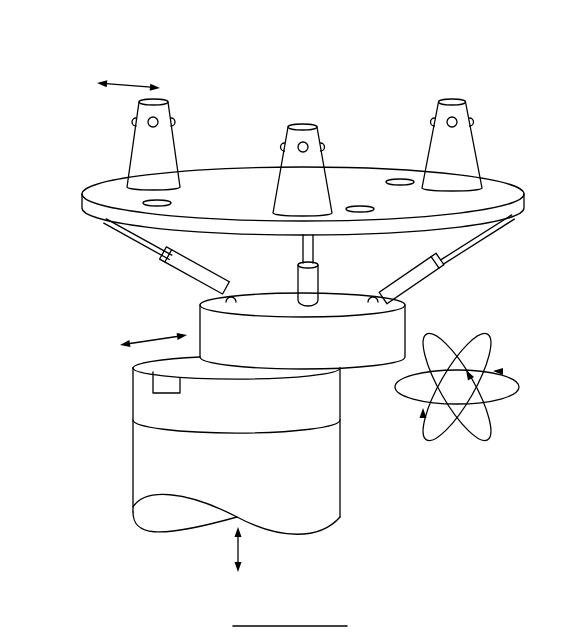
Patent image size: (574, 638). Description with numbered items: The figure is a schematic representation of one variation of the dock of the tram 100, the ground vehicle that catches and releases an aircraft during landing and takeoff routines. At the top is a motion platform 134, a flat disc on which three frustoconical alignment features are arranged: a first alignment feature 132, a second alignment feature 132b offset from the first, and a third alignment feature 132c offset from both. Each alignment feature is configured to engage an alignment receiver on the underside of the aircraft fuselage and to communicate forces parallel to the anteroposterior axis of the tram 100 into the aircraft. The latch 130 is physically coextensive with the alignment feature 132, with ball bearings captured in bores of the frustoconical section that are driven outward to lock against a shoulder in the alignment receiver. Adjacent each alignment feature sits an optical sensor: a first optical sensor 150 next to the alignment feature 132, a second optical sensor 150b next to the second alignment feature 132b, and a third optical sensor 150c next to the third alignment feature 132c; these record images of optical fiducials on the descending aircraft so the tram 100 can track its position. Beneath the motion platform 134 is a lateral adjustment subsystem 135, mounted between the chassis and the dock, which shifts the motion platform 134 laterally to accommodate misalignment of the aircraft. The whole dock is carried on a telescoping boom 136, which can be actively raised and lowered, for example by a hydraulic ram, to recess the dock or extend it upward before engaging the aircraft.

The tram 100 is at (519, 120).
The latch 130 is at (132, 122).
The alignment feature 132 is at (173, 112).
The second alignment feature 132b is at (286, 136).
The third alignment feature 132c is at (455, 160).
The motion platform 134 is at (513, 221).
The lateral adjustment subsystem 135 is at (312, 392).
The telescoping boom 136 is at (310, 460).
The optical sensor 150 is at (172, 203).
The second optical sensor 150b is at (363, 206).
The third optical sensor 150c is at (396, 178).